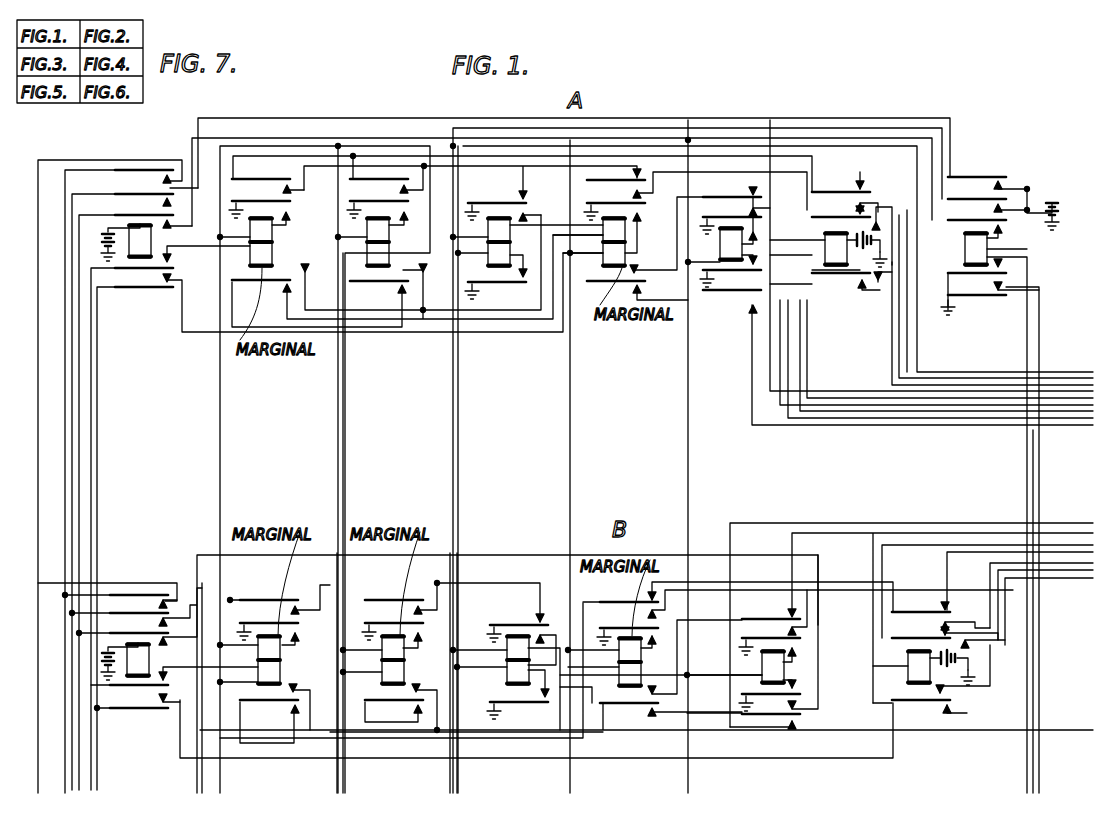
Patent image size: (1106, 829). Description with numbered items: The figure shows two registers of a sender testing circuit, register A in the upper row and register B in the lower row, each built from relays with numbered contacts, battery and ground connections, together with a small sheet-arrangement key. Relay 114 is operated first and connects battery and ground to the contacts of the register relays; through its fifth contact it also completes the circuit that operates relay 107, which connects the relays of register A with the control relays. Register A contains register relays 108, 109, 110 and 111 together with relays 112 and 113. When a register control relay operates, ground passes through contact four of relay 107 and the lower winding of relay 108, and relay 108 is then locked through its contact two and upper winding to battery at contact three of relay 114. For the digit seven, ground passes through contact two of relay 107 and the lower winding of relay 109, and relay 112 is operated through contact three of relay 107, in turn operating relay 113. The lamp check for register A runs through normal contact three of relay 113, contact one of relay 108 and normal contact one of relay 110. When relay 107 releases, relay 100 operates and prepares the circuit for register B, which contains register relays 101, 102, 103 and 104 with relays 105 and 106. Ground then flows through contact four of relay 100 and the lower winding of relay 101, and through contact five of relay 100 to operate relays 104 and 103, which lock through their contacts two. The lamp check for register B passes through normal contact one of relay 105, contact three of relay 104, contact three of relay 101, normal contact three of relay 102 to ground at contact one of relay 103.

The relay 100 is at (148, 657).
The register relay 101 is at (282, 672).
The relay 102 is at (382, 683).
The relay 103 is at (507, 668).
The relay 104 is at (641, 672).
The relay 105 is at (762, 665).
The relay 106 is at (908, 665).
The relay 107 is at (143, 257).
The register relay 108 is at (272, 246).
The register relay 109 is at (389, 240).
The relay 110 is at (510, 240).
The relay 111 is at (625, 237).
The relay 112 is at (742, 245).
The relay 113 is at (840, 263).
The relay 114 is at (965, 249).